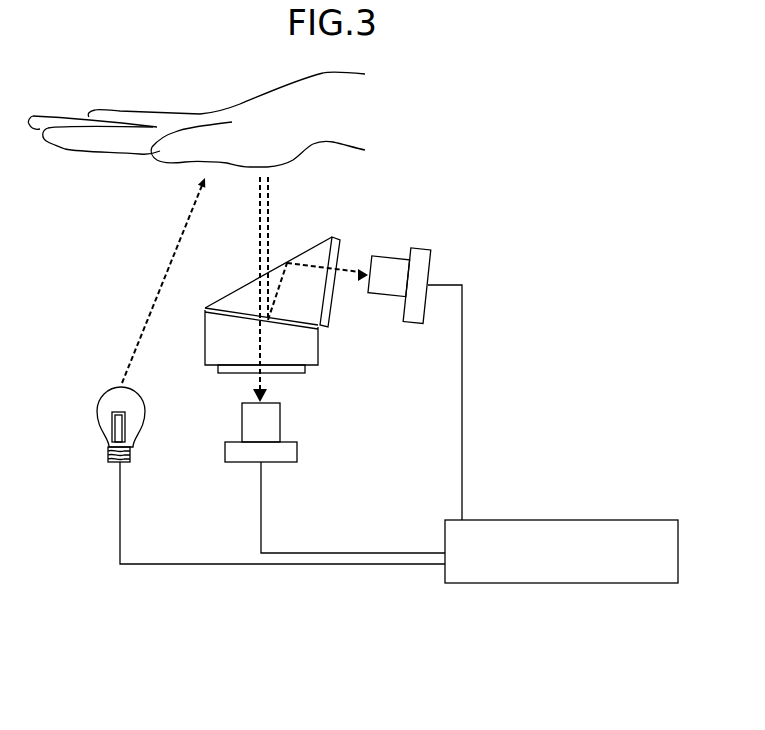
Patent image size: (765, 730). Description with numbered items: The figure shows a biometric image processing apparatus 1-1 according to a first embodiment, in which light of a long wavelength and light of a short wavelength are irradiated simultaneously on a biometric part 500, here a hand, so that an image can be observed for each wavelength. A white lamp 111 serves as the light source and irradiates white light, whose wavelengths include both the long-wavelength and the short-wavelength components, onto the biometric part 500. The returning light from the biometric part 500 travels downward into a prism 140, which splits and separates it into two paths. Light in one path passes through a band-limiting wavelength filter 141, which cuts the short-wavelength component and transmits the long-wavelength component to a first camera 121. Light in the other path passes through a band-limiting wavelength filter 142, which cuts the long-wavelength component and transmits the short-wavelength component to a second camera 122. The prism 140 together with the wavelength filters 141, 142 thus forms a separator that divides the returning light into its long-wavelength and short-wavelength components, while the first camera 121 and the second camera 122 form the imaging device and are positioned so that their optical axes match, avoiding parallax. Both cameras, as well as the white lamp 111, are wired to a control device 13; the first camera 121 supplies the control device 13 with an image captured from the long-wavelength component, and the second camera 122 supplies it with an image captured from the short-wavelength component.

The biometric part 500 is at (104, 153).
The biometric image processing apparatus 1-1 is at (438, 201).
The white lamp 111 is at (108, 463).
The first camera 121 is at (418, 247).
The second camera 122 is at (285, 465).
The prism 140 is at (250, 283).
The wavelength filter 141 is at (333, 317).
The wavelength filter 142 is at (305, 368).
The control device 13 is at (632, 520).